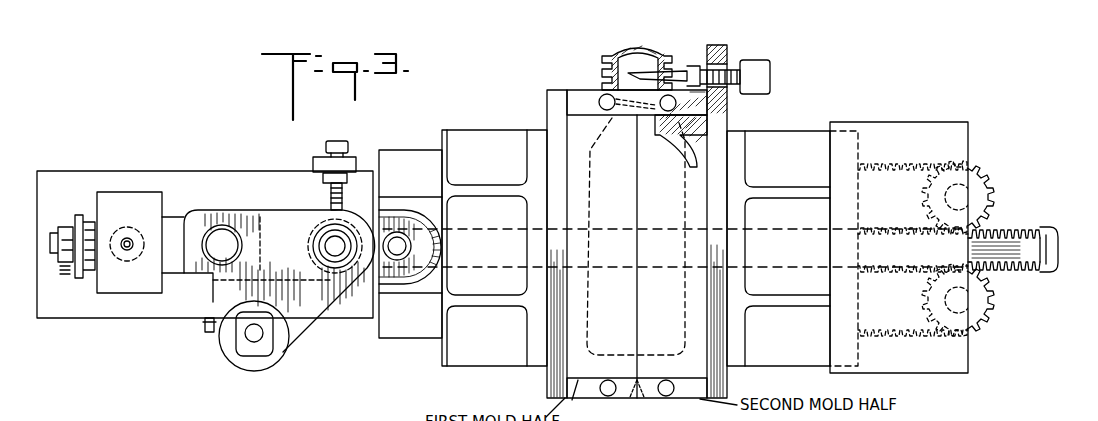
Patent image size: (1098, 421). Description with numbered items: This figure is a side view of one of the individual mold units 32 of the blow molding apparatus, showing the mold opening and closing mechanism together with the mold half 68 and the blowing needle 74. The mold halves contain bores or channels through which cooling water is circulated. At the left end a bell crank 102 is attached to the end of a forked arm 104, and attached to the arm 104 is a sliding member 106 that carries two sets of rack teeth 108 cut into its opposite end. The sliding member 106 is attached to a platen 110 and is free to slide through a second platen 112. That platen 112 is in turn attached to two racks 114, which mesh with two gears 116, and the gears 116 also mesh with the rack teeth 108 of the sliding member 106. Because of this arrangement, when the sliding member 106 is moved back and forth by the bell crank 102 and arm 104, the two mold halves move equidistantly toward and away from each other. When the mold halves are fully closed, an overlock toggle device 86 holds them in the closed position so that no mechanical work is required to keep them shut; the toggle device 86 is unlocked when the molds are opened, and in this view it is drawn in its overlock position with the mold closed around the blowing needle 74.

The mold unit 32 is at (524, 330).
The mold half 68 is at (683, 362).
The blowing needle 74 is at (673, 66).
The overlock toggle device 86 is at (352, 161).
The bell crank 102 is at (238, 352).
The forked arm 104 is at (308, 322).
The sliding member 106 is at (816, 226).
The rack teeth 108 is at (1026, 247).
The platen 110 is at (446, 334).
The platen 112 is at (754, 358).
The rack 114 is at (942, 128).
The gear 116 is at (988, 193).